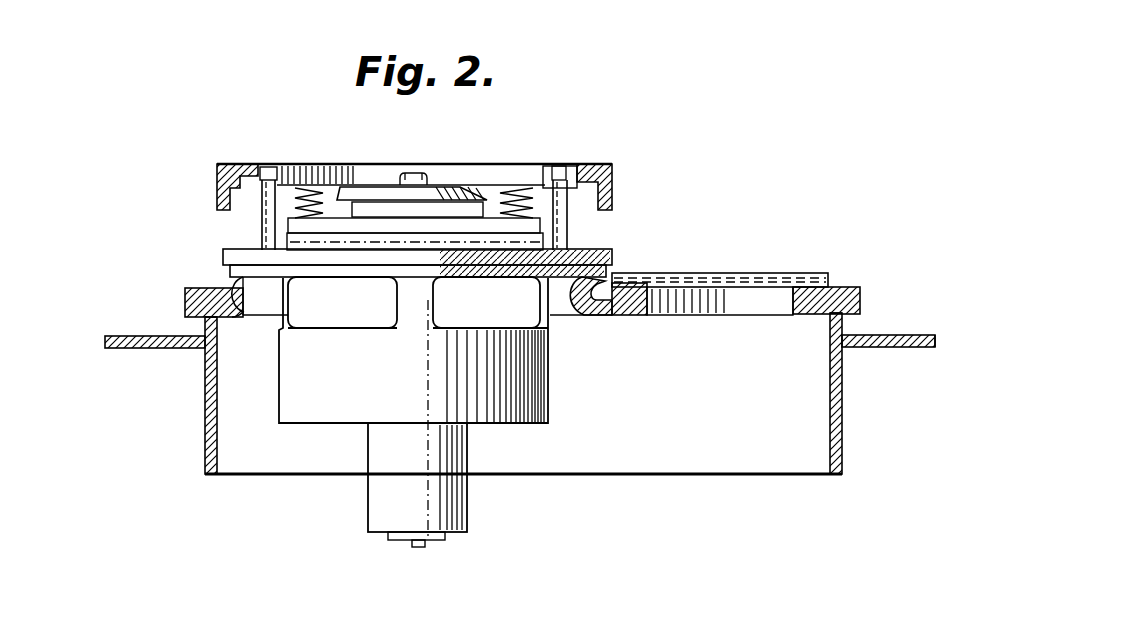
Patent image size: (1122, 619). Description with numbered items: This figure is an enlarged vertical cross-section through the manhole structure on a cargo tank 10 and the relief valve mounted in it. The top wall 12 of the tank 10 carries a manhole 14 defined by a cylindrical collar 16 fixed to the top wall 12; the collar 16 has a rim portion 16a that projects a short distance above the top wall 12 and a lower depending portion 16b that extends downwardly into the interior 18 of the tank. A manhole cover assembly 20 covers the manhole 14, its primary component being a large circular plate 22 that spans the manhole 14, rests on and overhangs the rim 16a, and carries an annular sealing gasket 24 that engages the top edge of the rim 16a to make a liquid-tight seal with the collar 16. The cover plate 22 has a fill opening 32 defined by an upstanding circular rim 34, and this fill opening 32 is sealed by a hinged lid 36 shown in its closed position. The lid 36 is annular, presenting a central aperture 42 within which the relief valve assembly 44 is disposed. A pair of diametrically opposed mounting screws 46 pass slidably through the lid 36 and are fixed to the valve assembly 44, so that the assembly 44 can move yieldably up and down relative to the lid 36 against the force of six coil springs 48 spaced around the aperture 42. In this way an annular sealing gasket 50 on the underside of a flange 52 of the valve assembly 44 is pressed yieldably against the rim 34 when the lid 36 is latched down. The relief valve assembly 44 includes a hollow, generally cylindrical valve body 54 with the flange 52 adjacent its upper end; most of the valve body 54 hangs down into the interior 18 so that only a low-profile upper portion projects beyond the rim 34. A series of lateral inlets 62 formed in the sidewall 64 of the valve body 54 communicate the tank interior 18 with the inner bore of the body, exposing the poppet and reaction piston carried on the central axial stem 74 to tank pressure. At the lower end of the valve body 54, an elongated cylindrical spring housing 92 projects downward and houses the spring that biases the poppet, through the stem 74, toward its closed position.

The cargo tank 10 is at (936, 320).
The top wall 12 is at (905, 334).
The manhole 14 is at (716, 474).
The cylindrical collar 16 is at (842, 394).
The rim portion 16a is at (206, 321).
The lower depending portion 16b is at (842, 457).
The interior of the tank 18 is at (914, 370).
The manhole cover assembly 20 is at (839, 266).
The circular plate 22 is at (846, 289).
The annular sealing gasket 24 is at (200, 290).
The fill opening 32 is at (554, 291).
The upstanding circular rim 34 is at (579, 300).
The lid 36 is at (605, 168).
The central aperture 42 is at (383, 171).
The relief valve assembly 44 is at (468, 178).
The mounting screws 46 is at (262, 167).
The coil springs 48 is at (540, 175).
The annular sealing gasket 50 is at (226, 271).
The flange 52 is at (236, 254).
The valve body 54 is at (560, 406).
The lateral inlets 62 is at (450, 308).
The sidewall 64 is at (354, 413).
The stem 74 is at (418, 547).
The spring housing 92 is at (480, 495).